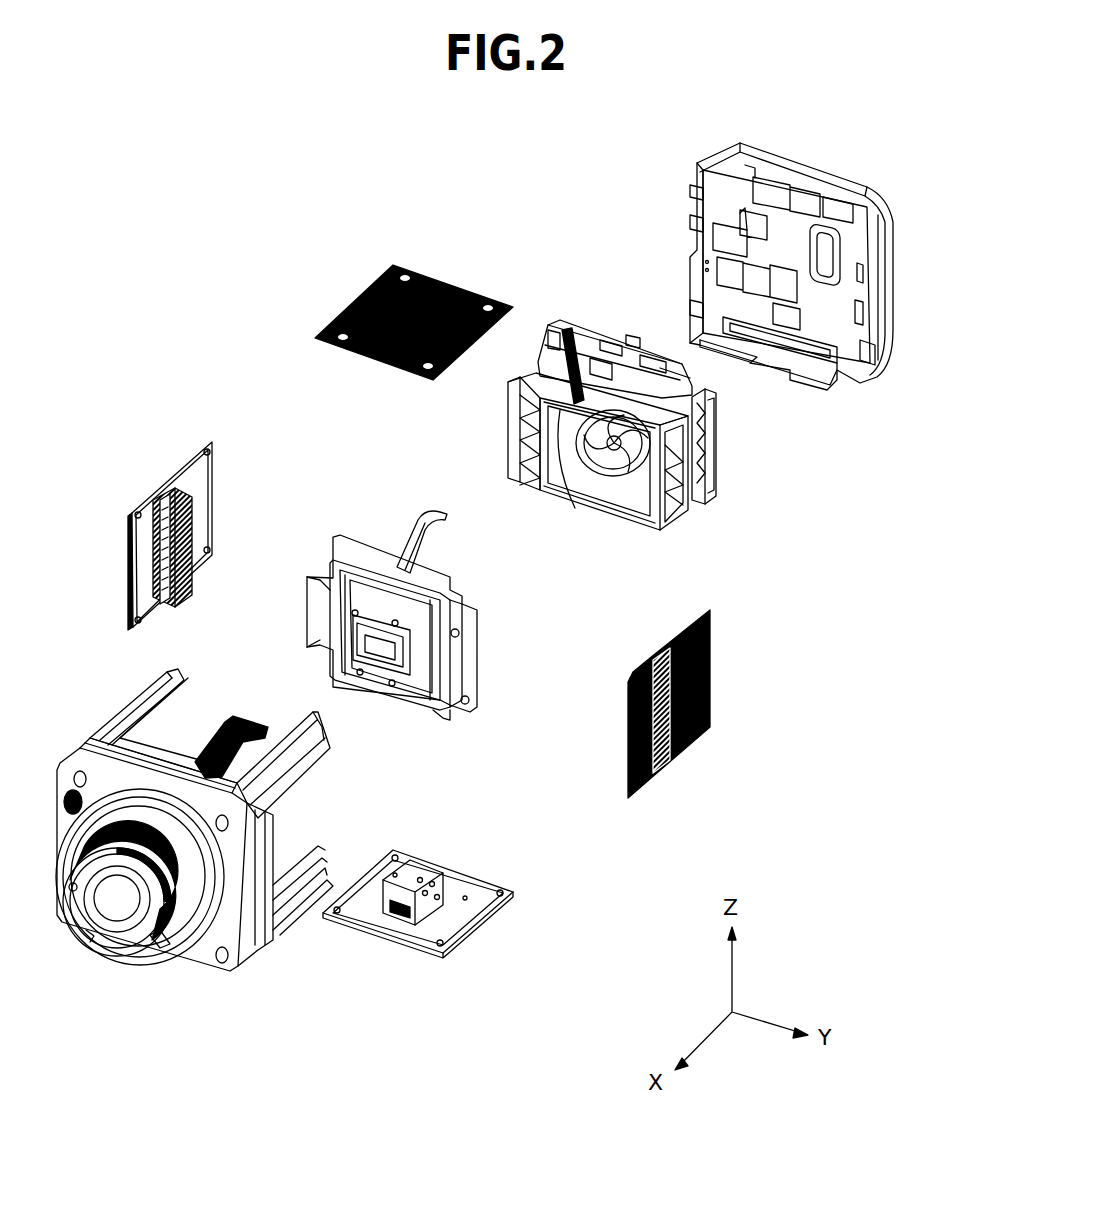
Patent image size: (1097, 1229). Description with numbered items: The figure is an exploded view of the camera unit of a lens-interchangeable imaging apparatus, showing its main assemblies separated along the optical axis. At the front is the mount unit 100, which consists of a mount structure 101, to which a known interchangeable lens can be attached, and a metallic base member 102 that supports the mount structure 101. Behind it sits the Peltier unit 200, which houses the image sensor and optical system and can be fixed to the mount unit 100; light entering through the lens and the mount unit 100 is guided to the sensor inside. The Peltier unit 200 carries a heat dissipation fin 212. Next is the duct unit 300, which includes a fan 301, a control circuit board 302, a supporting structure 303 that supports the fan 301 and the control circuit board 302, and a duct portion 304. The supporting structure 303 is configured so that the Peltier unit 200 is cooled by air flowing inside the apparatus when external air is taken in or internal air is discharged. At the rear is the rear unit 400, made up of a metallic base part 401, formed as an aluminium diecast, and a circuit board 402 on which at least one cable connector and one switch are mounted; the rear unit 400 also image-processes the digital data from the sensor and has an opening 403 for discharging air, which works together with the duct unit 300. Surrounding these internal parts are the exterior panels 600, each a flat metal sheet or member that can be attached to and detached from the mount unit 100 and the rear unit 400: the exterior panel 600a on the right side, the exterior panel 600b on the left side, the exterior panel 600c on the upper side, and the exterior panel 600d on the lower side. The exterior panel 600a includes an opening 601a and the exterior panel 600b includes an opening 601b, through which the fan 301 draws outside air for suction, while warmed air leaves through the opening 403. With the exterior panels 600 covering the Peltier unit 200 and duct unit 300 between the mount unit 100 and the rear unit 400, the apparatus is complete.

The mount unit 100 is at (194, 831).
The mount structure 101 is at (122, 960).
The base member 102 is at (272, 942).
The Peltier unit 200 is at (380, 615).
The heat dissipation fin 212 is at (476, 613).
The duct unit 300 is at (666, 427).
The fan 301 is at (608, 447).
The control circuit board 302 is at (620, 332).
The supporting structure 303 is at (708, 422).
The duct portion 304 is at (633, 510).
The rear unit 400 is at (832, 259).
The base part 401 is at (897, 317).
The circuit board 402 is at (847, 292).
The opening 403 is at (775, 338).
The exterior panels 600 is at (466, 584).
The exterior panel 600a is at (182, 517).
The exterior panel 600b is at (751, 729).
The exterior panel 600c is at (350, 293).
The exterior panel 600d is at (480, 893).
The opening 601a is at (192, 527).
The opening 601b is at (670, 765).